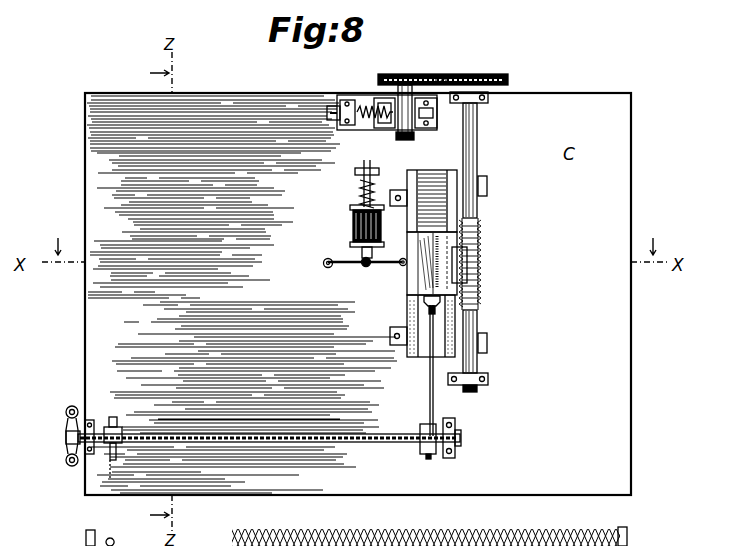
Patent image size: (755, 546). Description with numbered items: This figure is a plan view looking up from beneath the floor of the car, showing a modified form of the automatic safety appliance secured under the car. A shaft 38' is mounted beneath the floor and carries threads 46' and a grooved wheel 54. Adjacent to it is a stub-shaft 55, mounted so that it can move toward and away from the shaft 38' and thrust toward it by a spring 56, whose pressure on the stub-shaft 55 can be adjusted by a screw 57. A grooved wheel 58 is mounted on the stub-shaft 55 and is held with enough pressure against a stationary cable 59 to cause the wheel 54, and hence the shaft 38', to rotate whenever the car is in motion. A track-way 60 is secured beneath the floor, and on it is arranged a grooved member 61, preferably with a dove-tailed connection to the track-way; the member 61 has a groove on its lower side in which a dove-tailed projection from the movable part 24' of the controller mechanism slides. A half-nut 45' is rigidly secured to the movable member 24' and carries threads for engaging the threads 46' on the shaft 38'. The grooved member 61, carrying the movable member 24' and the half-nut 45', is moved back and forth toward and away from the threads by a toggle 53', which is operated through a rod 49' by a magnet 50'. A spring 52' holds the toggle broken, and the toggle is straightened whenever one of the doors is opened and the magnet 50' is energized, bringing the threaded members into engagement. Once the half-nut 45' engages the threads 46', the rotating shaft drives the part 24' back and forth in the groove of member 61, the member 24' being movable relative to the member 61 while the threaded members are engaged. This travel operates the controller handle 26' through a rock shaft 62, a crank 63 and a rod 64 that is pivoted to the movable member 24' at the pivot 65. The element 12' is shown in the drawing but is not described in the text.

The grooved wheel 54 is at (478, 78).
The stationary cable 59 is at (445, 74).
The grooved wheel 58 is at (404, 74).
The spring 56 is at (372, 108).
The screw 57 is at (336, 109).
The stub-shaft 55 is at (411, 134).
The shaft 38' is at (496, 242).
The threads 46' is at (512, 264).
The half-nut 45' is at (501, 257).
The track-way 60 is at (487, 343).
The grooved member 61 is at (418, 221).
The movable member 24' is at (490, 239).
The lower frame block 12' is at (401, 318).
The pivot 65 is at (430, 308).
The rod 64 is at (435, 407).
The spring 52' is at (345, 184).
The magnet 50' is at (350, 231).
The rod 49' is at (345, 253).
The toggle 53' is at (350, 278).
The rock shaft 62 is at (284, 436).
The crank 63 is at (420, 432).
The controller handle 26' is at (158, 465).